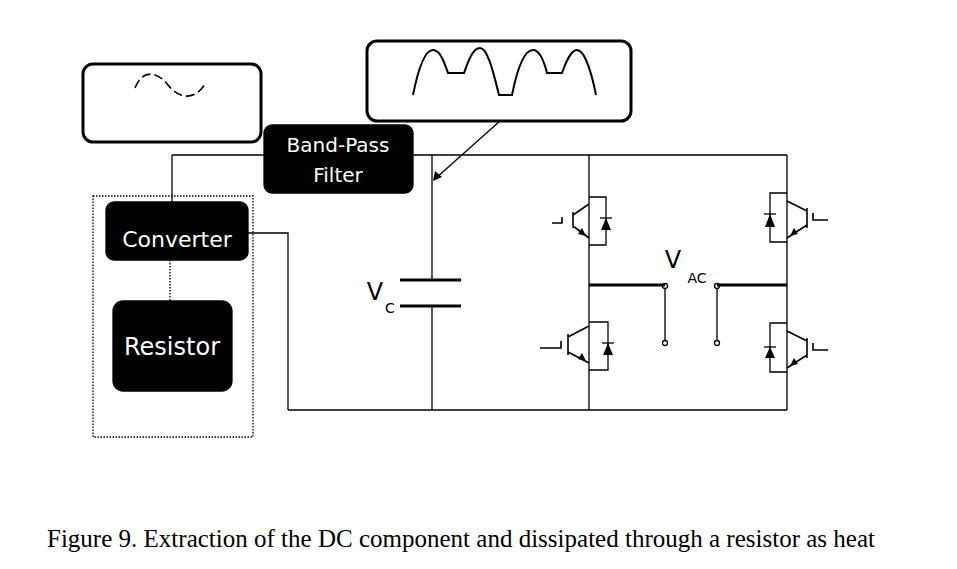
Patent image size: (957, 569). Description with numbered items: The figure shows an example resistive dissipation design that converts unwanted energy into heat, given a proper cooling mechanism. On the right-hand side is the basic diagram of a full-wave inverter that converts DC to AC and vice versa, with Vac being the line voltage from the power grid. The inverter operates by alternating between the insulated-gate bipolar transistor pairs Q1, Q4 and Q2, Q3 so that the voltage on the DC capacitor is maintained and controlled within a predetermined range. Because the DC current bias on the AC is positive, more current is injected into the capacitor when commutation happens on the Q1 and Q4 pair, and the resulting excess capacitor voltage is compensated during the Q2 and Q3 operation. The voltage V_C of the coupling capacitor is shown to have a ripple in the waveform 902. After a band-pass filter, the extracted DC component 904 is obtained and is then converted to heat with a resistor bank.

The ripple waveform of coupling capacitor voltage 902 is at (631, 58).
The extracted DC component 904 is at (83, 81).
The IGBT transistor Q1 is at (541, 227).
The IGBT transistor Q2 is at (544, 348).
The IGBT transistor Q3 is at (830, 219).
The IGBT transistor Q4 is at (831, 342).